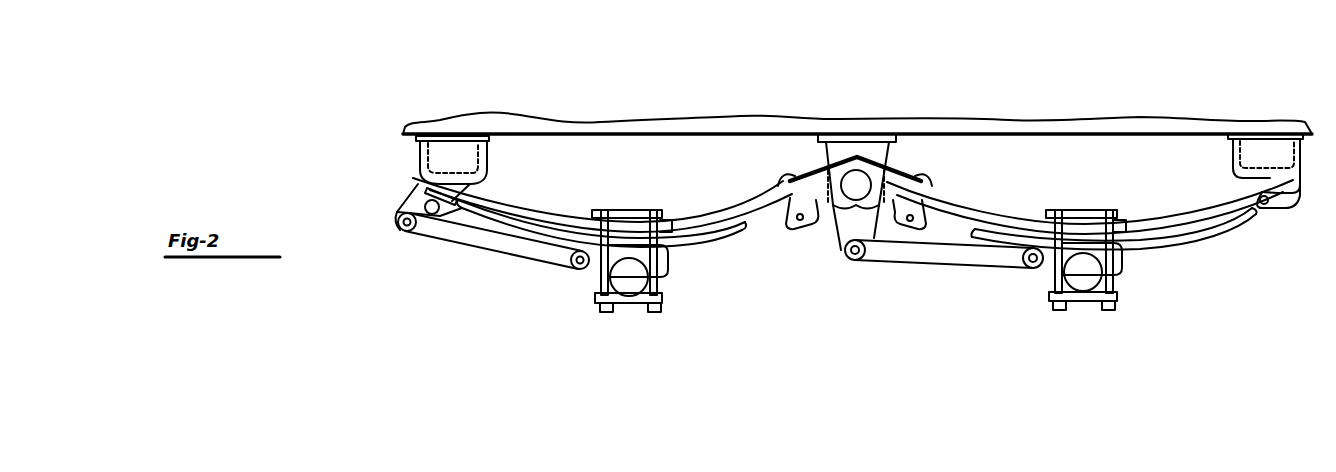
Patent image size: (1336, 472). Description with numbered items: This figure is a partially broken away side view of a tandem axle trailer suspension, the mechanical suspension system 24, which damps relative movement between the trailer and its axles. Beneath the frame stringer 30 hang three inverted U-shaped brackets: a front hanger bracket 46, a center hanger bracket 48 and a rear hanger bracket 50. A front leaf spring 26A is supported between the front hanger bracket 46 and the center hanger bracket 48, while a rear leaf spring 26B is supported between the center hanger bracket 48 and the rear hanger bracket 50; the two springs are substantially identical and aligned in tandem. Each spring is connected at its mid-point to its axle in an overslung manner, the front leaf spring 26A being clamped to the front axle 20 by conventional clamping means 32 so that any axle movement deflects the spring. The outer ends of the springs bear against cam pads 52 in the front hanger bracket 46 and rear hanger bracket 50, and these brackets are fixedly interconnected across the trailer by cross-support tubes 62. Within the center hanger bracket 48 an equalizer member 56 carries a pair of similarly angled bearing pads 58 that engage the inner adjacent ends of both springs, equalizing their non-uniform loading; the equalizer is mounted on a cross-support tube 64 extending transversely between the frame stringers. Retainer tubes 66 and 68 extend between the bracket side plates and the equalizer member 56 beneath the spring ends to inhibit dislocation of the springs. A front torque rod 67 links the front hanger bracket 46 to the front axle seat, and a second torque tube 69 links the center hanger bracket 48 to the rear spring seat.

The front axle 20 is at (626, 276).
The mechanical suspension system 24 is at (877, 270).
The front leaf spring 26A is at (602, 222).
The rear leaf spring 26B is at (1090, 217).
The frame stringer 30 is at (615, 122).
The clamping means 32 is at (629, 245).
The front hanger bracket 46 is at (410, 195).
The center hanger bracket 48 is at (882, 151).
The rear hanger bracket 50 is at (1285, 197).
The cam pads 52 is at (488, 164).
The equalizer member 56 is at (903, 171).
The bearing pads 58 is at (788, 180).
The cross-support tubes 62 is at (452, 152).
The cross-support tube 64 is at (853, 176).
The retainer tube 66 is at (400, 214).
The front torque rod 67 is at (512, 252).
The retainer tube 68 is at (792, 228).
The second torque tube 69 is at (958, 262).